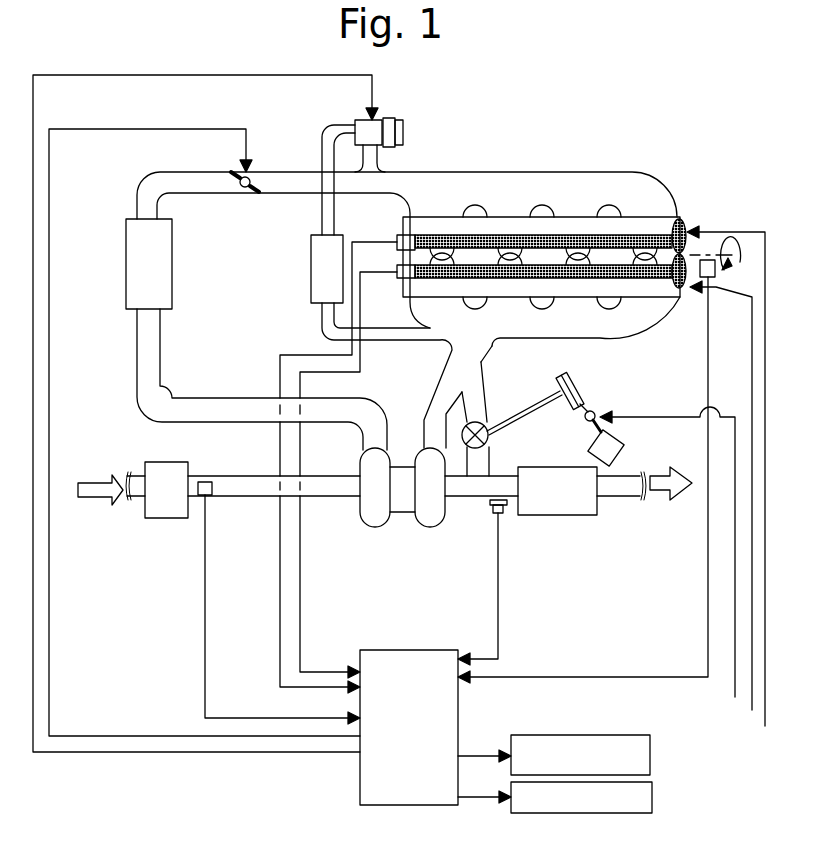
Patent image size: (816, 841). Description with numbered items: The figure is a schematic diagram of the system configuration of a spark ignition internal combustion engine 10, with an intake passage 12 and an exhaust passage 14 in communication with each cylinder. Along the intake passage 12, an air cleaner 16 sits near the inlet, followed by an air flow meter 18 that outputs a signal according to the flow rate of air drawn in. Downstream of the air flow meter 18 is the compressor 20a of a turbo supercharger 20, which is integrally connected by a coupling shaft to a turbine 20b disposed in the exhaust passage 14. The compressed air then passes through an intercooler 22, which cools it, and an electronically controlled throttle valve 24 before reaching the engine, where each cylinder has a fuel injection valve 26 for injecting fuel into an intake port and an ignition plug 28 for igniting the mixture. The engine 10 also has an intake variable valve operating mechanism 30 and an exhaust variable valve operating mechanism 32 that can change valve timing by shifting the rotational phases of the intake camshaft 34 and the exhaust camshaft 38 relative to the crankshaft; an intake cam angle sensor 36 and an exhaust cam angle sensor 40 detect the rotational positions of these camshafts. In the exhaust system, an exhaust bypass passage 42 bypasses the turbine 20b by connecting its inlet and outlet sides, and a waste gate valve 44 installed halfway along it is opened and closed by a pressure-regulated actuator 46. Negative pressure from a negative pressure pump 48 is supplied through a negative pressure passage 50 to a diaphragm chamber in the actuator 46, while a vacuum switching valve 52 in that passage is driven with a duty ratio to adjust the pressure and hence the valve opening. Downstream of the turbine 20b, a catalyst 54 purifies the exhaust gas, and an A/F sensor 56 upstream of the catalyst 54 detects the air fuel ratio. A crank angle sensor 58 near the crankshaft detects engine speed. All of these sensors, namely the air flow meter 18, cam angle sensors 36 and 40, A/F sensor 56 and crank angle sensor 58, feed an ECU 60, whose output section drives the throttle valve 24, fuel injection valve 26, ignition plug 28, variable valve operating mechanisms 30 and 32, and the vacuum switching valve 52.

The internal combustion engine 10 is at (628, 128).
The intake passage 12 is at (272, 172).
The exhaust passage 14 is at (478, 365).
The air cleaner 16 is at (150, 462).
The air flow meter 18 is at (205, 481).
The turbo supercharger 20 is at (405, 521).
The compressor 20a is at (376, 523).
The turbine 20b is at (430, 523).
The intercooler 22 is at (172, 270).
The throttle valve 24 is at (238, 170).
The fuel injection valve 26 is at (650, 755).
The ignition plug 28 is at (652, 795).
The intake variable valve operating mechanism 30 is at (684, 220).
The exhaust variable valve operating mechanism 32 is at (684, 290).
The intake camshaft 34 is at (474, 242).
The intake cam angle sensor 36 is at (398, 240).
The exhaust camshaft 38 is at (586, 274).
The exhaust cam angle sensor 40 is at (400, 278).
The exhaust bypass passage 42 is at (466, 424).
The waste gate valve 44 is at (494, 432).
The actuator 46 is at (588, 373).
The negative pressure pump 48 is at (622, 450).
The negative pressure passage 50 is at (592, 412).
The vacuum switching valve 52 is at (586, 420).
The catalyst 54 is at (550, 515).
The A/F sensor 56 is at (508, 518).
The crank angle sensor 58 is at (708, 283).
The ECU 60 is at (400, 650).